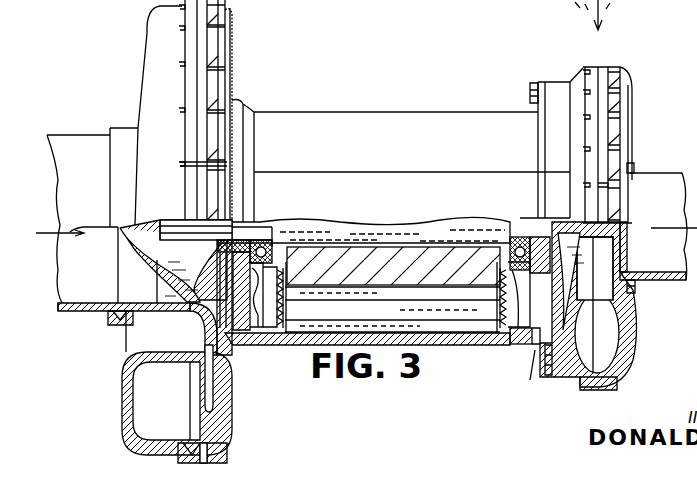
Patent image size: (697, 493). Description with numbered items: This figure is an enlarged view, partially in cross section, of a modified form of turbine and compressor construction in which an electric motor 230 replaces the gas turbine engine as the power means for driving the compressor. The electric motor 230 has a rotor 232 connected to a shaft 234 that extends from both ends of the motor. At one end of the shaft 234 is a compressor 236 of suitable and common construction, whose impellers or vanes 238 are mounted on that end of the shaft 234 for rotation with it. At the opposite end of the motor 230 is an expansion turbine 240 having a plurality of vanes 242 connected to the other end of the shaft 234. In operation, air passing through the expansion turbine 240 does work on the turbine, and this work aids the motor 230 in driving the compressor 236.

The electric motor 230 is at (405, 133).
The rotor 232 is at (408, 263).
The shaft 234 is at (430, 233).
The compressor 236 is at (147, 37).
The impellers or vanes 238 is at (170, 276).
The expansion turbine 240 is at (620, 133).
The vanes 242 is at (606, 249).